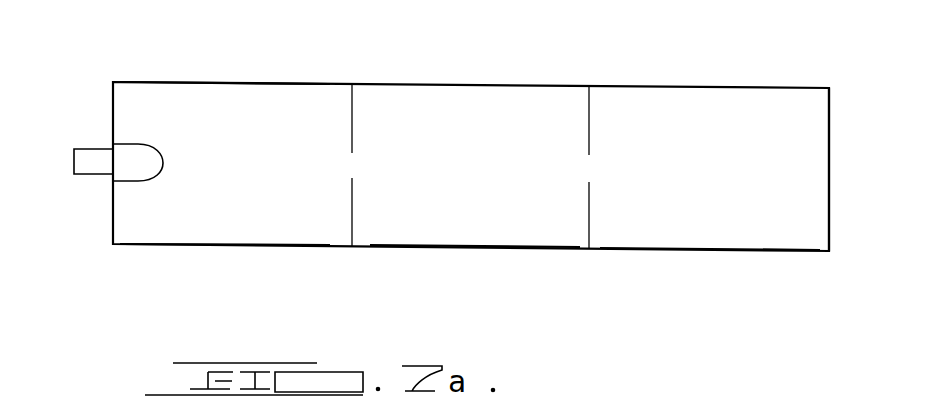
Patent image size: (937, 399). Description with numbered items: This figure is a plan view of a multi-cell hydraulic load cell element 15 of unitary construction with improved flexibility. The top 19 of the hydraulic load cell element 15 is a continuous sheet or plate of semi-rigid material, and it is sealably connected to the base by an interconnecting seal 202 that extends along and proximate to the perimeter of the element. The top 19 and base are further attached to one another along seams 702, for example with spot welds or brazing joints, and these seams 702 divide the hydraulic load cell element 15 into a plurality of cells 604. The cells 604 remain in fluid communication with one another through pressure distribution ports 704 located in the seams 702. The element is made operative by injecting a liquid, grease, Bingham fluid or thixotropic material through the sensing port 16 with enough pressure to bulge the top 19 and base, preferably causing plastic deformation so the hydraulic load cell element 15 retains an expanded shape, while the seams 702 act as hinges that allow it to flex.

The hydraulic load cell element 15 is at (97, 66).
The sensing port 16 is at (82, 172).
The top 19 is at (200, 93).
The interconnecting seal 202 is at (798, 87).
The cells 604 is at (162, 253).
The seams 702 is at (353, 120).
The pressure distribution ports 704 is at (352, 162).